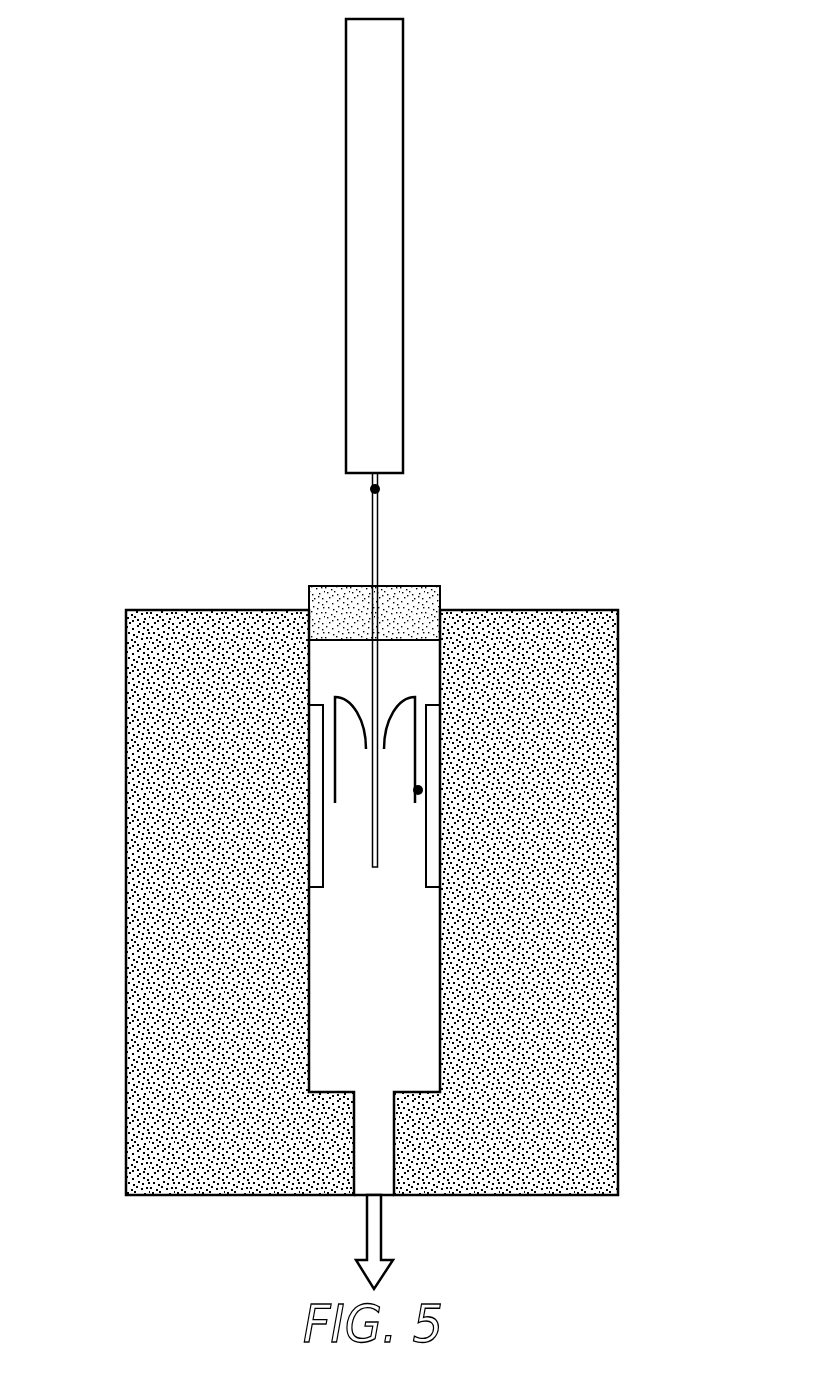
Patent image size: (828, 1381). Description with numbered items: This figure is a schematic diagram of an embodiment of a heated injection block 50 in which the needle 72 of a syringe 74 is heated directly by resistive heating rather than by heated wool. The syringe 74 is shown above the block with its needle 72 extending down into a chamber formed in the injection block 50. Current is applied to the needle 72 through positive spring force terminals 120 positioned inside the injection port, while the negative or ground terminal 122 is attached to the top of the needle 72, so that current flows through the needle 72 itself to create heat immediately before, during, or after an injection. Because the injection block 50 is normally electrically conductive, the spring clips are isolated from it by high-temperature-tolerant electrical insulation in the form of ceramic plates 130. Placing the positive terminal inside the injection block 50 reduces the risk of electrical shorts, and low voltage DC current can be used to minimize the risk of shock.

The injection block 50 is at (520, 1123).
The syringe 74 is at (406, 231).
The needle 72 is at (380, 547).
The ground terminal 122 is at (380, 489).
The ceramic plates 130 is at (300, 774).
The spring force terminals 120 is at (420, 790).